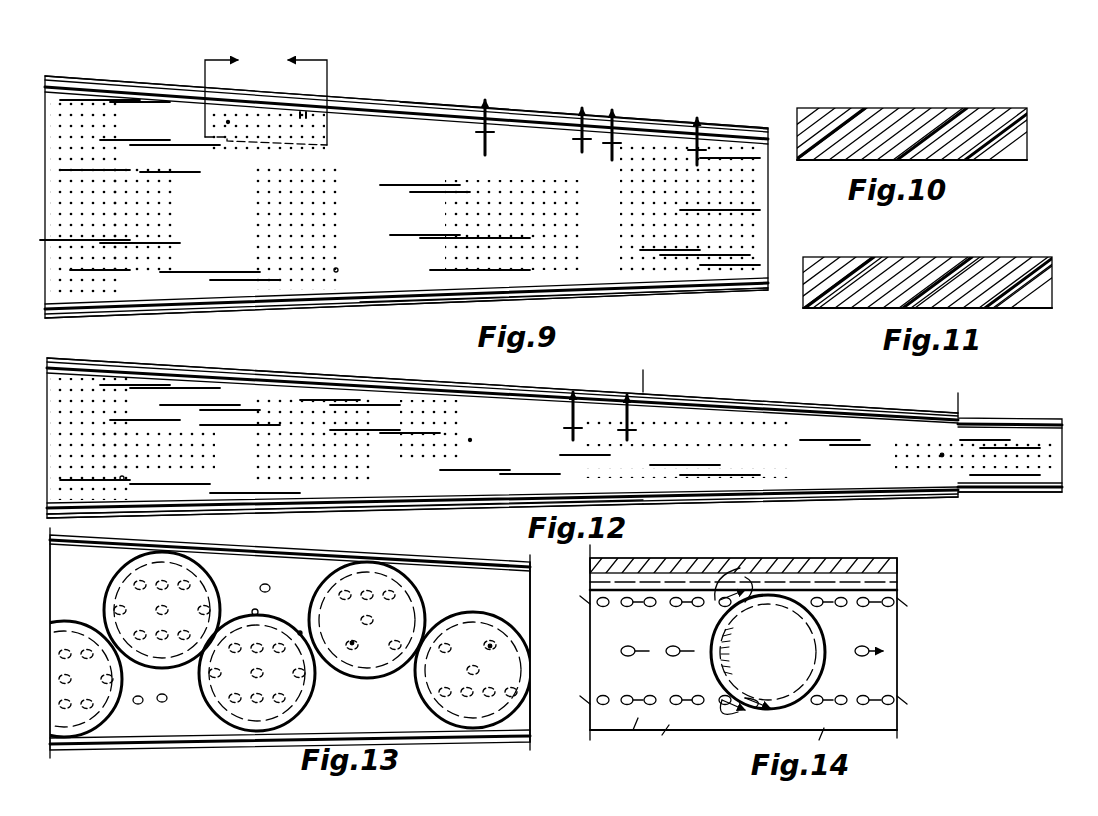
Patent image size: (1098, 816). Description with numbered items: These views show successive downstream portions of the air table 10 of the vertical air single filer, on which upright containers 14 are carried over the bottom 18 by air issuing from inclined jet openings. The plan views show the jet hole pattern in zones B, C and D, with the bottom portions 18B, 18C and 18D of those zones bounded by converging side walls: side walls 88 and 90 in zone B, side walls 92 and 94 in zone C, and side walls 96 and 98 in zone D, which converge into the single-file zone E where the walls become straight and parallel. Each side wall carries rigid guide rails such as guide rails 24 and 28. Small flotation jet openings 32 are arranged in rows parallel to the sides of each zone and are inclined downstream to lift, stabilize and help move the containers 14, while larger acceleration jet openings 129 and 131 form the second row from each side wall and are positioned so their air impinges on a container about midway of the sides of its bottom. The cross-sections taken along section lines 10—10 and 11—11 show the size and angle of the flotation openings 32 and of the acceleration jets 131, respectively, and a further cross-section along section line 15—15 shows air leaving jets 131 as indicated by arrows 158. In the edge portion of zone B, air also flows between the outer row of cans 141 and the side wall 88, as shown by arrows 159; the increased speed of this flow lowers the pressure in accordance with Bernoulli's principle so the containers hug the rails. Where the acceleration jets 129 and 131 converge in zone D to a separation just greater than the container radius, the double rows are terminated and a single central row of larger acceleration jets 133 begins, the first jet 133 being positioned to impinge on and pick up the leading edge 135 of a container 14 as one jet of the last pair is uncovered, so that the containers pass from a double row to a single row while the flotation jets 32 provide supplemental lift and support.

In FIG. 9, the air table 10 is at (525, 141).
In FIG. 9, the section line 11— 11 is at (647, 158).
In FIG. 9, the container 14 is at (266, 102).
In FIG. 13, the container 14 is at (102, 587).
In FIG. 12, the section line 15— 15 is at (594, 431).
In FIG. 9, the bottom 18 is at (334, 237).
In FIG. 10, the bottom 18 is at (985, 108).
In FIG. 11, the bottom 18 is at (917, 282).
In FIG. 12, the bottom 18 is at (360, 451).
In FIG. 13, the bottom 18 is at (357, 721).
In FIG. 14, the bottom 18 is at (743, 642).
In FIG. 9, the bottom of zone B 18B is at (306, 285).
In FIG. 10, the bottom of zone B 18B is at (1020, 160).
In FIG. 11, the bottom of zone B 18B is at (1018, 308).
In FIG. 14, the bottom of zone B 18B is at (743, 735).
In FIG. 12, the bottom of zone C 18C is at (404, 383).
In FIG. 12, the bottom of zone D 18D is at (812, 480).
In FIG. 13, the bottom of zone D 18D is at (520, 594).
In FIG. 9, the upper rigid guide rail 24 is at (430, 108).
In FIG. 12, the upper rigid guide rail 24 is at (455, 393).
In FIG. 13, the upper rigid guide rail 24 is at (238, 549).
In FIG. 14, the upper rigid guide rail 24 is at (800, 580).
In FIG. 9, the upper rigid guide rail 28 is at (250, 298).
In FIG. 12, the upper rigid guide rail 28 is at (845, 490).
In FIG. 13, the upper rigid guide rail 28 is at (290, 740).
In FIG. 9, the flotation air jet opening 32 is at (306, 110).
In FIG. 10, the flotation air jet opening 32 is at (868, 108).
In FIG. 12, the flotation air jet opening 32 is at (470, 440).
In FIG. 13, the flotation air jet opening 32 is at (270, 587).
In FIG. 9, the side wall 88 is at (540, 110).
In FIG. 14, the side wall 88 is at (660, 558).
In FIG. 9, the side wall 90 is at (380, 300).
In FIG. 12, the side wall 92 is at (287, 375).
In FIG. 12, the side wall 94 is at (470, 505).
In FIG. 12, the side wall 96 is at (700, 398).
In FIG. 12, the side wall 98 is at (908, 492).
In FIG. 9, the acceleration jet opening 129 is at (338, 269).
In FIG. 12, the acceleration jet opening 129 is at (124, 477).
In FIG. 13, the acceleration jet opening 129 is at (165, 702).
In FIG. 9, the acceleration jet opening 131 is at (228, 122).
In FIG. 11, the acceleration jet opening 131 is at (873, 257).
In FIG. 13, the acceleration jet opening 131 is at (255, 610).
In FIG. 14, the acceleration jet opening 131 is at (673, 648).
In FIG. 12, the single row acceleration jet 133 is at (940, 455).
In FIG. 13, the single row acceleration jet 133 is at (354, 641).
In FIG. 13, the leading edge 135 is at (300, 632).
In FIG. 14, the can 141 is at (757, 651).
In FIG. 14, the arrows 158 is at (683, 664).
In FIG. 14, the arrows 159 is at (730, 736).
In FIG. 9, the zone B is at (345, 96).
In FIG. 14, the zone B is at (860, 580).
In FIG. 12, the zone C is at (337, 375).
In FIG. 12, the zone D is at (747, 400).
In FIG. 13, the zone D is at (430, 553).
In FIG. 12, the zone E is at (1010, 418).